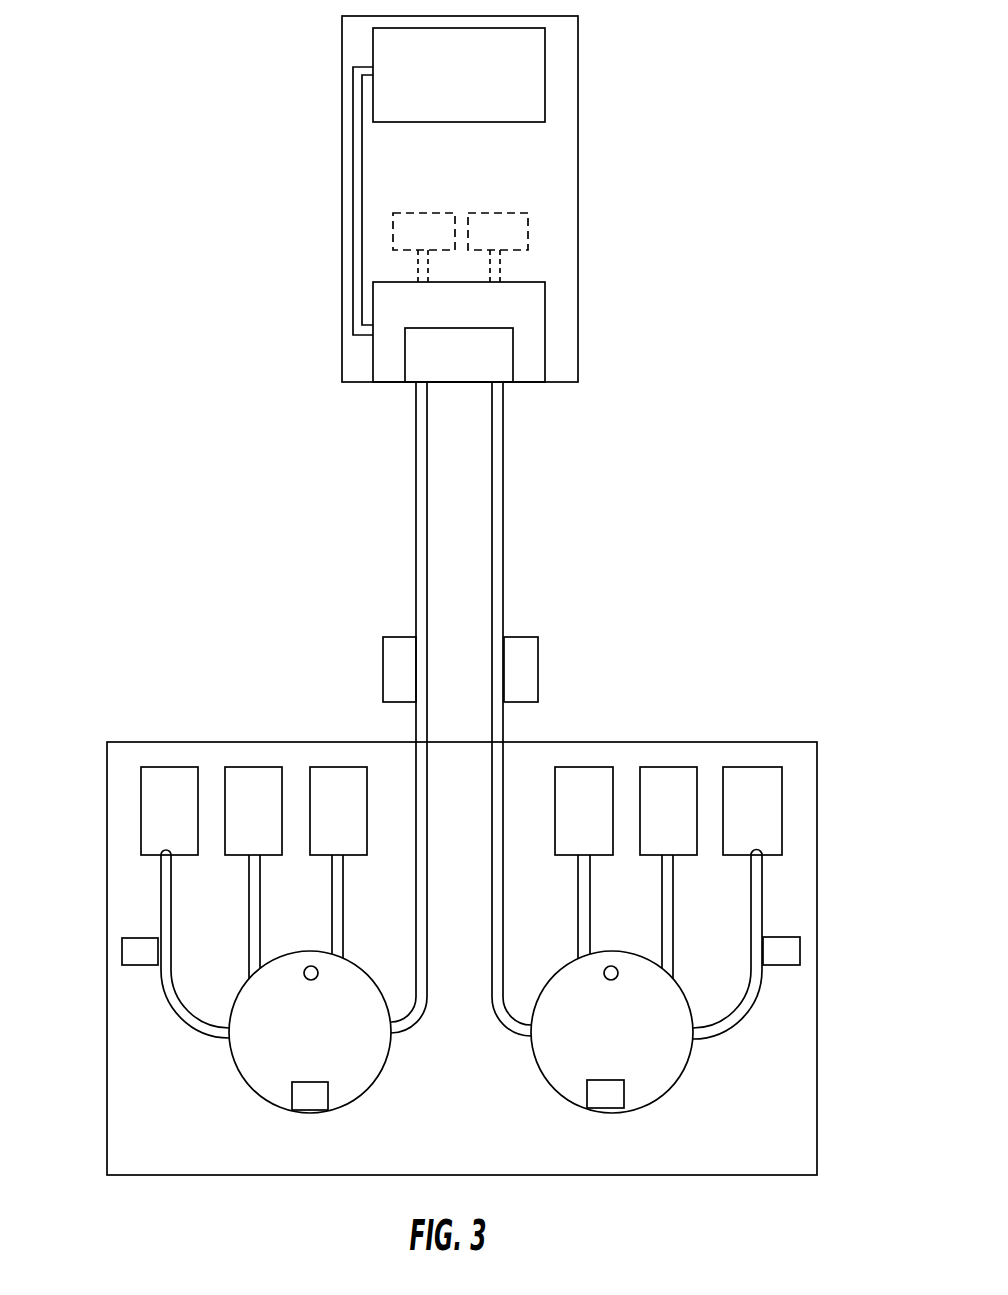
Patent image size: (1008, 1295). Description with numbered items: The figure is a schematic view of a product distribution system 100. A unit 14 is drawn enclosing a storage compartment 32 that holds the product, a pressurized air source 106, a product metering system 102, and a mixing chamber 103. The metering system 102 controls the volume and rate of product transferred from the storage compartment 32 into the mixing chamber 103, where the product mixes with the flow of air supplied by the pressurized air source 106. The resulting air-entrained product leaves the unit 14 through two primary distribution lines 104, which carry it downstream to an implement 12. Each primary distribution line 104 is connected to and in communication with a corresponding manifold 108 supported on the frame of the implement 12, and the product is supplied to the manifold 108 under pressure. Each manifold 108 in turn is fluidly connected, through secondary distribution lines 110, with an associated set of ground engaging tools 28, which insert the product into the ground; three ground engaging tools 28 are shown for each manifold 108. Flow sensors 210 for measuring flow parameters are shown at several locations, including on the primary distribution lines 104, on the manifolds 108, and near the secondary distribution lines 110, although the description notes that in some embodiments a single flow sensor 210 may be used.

The product distribution system 100 is at (180, 230).
The control unit housing 14 is at (578, 180).
The storage compartment 32 is at (545, 70).
The product metering system 102 is at (545, 330).
The mixing chamber 103 is at (513, 355).
The pressurized air source 106 is at (528, 230).
The primary distribution lines 104 is at (416, 560).
The implement 12 is at (822, 1050).
The ground engaging tools 28 is at (162, 767).
The secondary distribution lines 110 is at (161, 907).
The manifold 108 is at (252, 1089).
The flow sensor 210 is at (383, 675).